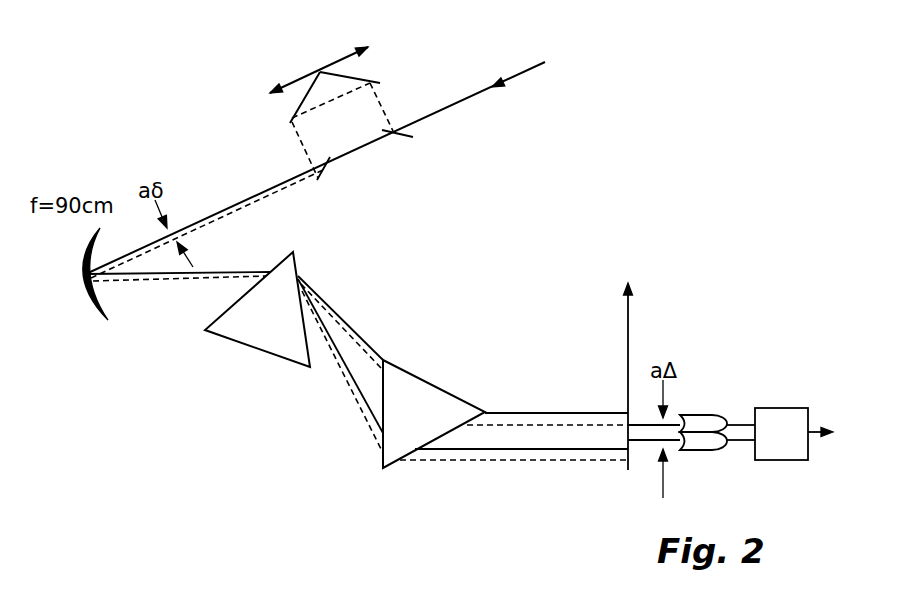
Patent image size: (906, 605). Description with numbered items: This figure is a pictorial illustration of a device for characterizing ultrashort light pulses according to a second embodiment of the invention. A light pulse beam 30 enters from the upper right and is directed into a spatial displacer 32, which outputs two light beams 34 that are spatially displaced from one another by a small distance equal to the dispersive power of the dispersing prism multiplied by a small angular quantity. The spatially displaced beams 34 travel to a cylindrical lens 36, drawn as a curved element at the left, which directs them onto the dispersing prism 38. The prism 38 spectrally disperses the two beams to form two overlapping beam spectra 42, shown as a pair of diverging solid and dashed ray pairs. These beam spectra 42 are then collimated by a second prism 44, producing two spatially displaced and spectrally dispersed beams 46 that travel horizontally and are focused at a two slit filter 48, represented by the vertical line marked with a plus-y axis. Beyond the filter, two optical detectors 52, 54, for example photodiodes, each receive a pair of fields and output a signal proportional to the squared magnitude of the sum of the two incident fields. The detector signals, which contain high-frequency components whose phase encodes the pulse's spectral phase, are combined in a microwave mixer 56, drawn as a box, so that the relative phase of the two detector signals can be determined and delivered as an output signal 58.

The light pulse beam 30 is at (507, 82).
The spatial displacer 32 is at (405, 73).
The spatially displaced light beams 34 is at (237, 210).
The cylindrical lens 36 is at (88, 303).
The dispersing prism 38 is at (247, 337).
The overlapping beam spectra 42 is at (357, 350).
The collimating prism 44 is at (410, 385).
The spatially displaced and spectrally dispersed beams 46 is at (473, 443).
The two slit filter 48 is at (632, 348).
The optical detector 52 is at (697, 417).
The optical detector 54 is at (707, 448).
The microwave mixer 56 is at (781, 434).
The output signal 58 is at (837, 433).